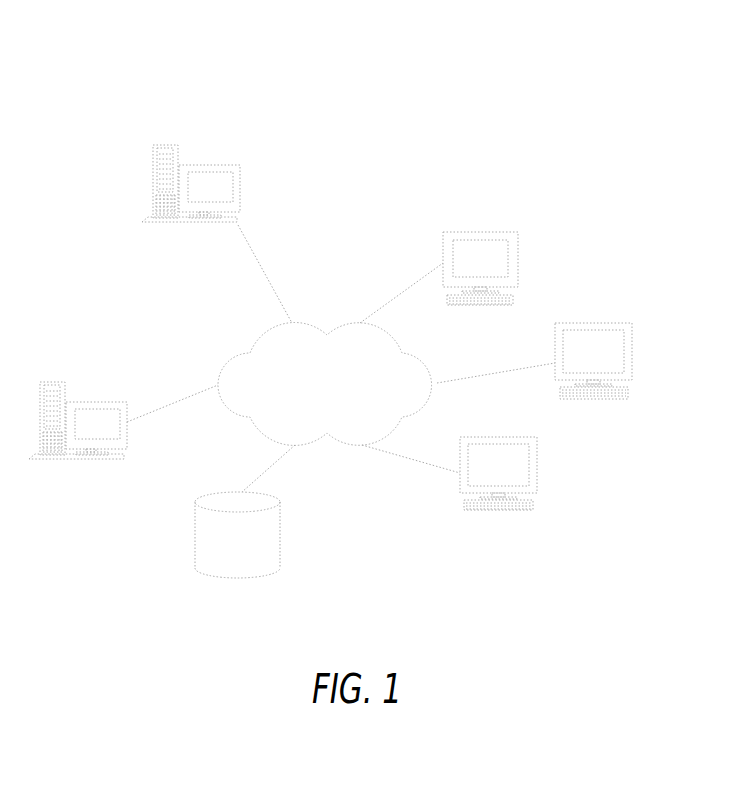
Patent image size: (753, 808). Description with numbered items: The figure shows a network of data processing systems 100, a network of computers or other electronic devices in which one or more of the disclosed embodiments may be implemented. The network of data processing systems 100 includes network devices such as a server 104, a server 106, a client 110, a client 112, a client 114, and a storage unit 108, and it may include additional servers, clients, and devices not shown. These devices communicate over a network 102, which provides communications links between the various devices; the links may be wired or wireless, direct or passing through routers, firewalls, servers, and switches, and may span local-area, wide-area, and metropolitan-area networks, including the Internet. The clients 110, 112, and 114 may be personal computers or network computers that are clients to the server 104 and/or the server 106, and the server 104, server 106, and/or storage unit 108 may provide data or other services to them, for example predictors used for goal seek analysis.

The network of data processing systems 100 is at (96, 76).
The network 102 is at (342, 380).
The server 104 is at (63, 382).
The server 106 is at (242, 182).
The storage unit 108 is at (282, 529).
The client 110 is at (520, 246).
The client 112 is at (634, 348).
The client 114 is at (539, 463).